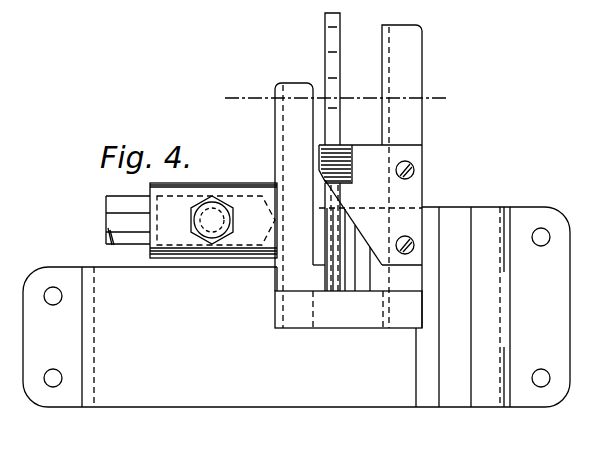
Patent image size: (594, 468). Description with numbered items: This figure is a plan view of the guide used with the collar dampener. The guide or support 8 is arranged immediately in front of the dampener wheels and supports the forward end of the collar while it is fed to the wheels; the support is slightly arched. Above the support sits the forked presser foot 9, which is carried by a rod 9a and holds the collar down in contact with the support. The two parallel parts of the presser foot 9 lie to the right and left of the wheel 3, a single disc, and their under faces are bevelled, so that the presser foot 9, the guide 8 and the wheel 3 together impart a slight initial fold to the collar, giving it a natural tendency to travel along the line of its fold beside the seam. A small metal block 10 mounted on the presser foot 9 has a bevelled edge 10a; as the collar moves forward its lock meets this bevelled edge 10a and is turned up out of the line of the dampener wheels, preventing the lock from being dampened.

The wheel 3 is at (325, 53).
The guide or support 8 is at (296, 307).
The forked presser foot 9 is at (424, 116).
The rod 9a is at (108, 213).
The metal block 10 is at (415, 190).
The bevelled edge 10a is at (355, 227).